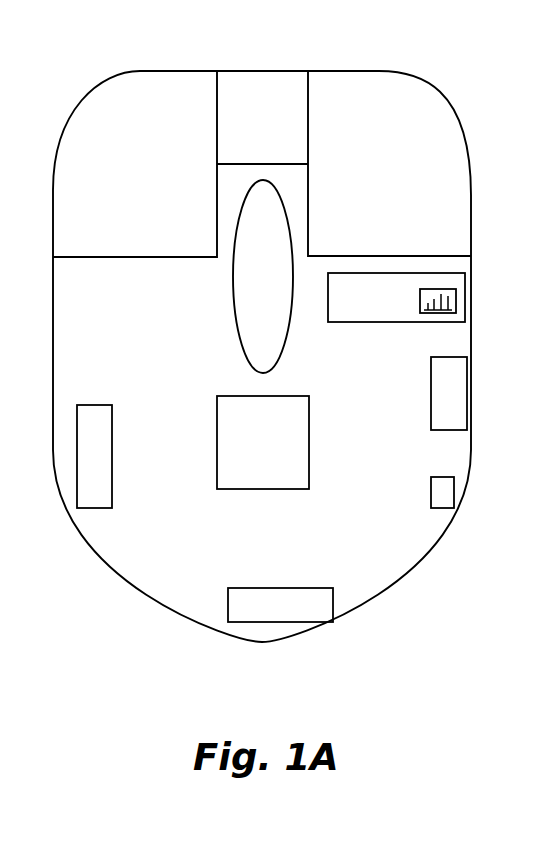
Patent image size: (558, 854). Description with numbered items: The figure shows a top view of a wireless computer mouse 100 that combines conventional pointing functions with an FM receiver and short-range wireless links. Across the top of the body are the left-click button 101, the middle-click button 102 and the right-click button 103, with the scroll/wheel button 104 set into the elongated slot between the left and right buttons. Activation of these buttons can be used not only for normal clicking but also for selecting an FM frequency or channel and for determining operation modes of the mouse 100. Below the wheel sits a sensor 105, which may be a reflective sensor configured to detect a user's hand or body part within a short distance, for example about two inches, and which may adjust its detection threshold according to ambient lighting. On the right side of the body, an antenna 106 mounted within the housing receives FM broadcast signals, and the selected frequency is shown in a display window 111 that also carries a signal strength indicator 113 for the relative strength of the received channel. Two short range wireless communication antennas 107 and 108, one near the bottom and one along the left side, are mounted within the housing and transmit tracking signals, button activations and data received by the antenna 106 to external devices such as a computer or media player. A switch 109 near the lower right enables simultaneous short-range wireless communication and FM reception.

The wireless computer mouse 100 is at (427, 549).
The left-click button 101 is at (103, 120).
The middle-click button 102 is at (247, 70).
The right-click button 103 is at (438, 153).
The scroll/wheel button 104 is at (243, 311).
The sensor 105 is at (296, 396).
The antenna 106 is at (431, 403).
The short range wireless communication antenna 107 is at (298, 588).
The short range wireless communication antenna 108 is at (101, 405).
The switch 109 is at (431, 497).
The display window 111 is at (448, 272).
The signal strength indicator 113 is at (456, 296).